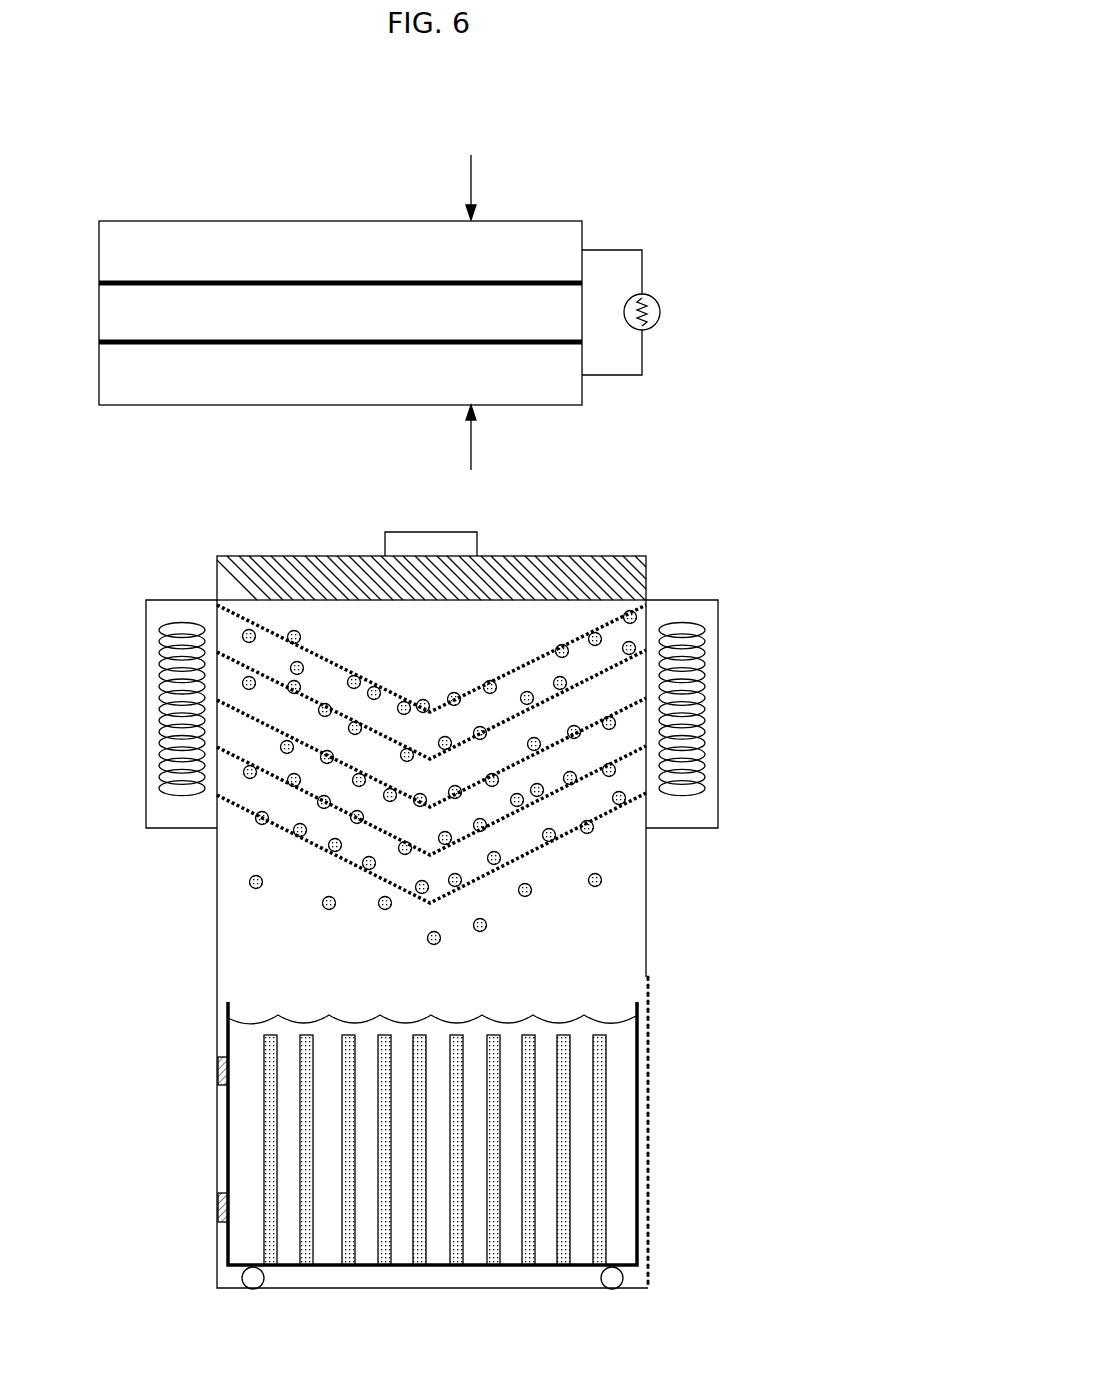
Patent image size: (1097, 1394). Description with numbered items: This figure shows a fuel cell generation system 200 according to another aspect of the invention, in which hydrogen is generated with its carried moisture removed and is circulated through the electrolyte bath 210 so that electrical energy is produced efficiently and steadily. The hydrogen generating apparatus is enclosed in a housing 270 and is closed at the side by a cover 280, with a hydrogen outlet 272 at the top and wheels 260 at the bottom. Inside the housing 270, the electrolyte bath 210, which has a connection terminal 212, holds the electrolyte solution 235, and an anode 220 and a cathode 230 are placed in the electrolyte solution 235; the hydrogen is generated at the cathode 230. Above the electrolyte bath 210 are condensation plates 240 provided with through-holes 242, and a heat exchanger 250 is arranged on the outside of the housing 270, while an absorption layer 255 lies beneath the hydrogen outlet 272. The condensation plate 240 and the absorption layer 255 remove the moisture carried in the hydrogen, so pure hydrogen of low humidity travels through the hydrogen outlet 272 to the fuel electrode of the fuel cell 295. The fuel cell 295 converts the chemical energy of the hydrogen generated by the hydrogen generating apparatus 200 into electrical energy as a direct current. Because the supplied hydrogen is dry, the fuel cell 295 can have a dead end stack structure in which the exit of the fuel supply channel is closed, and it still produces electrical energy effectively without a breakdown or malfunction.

The fuel cell generation system 200 is at (686, 120).
The fuel cell 295 is at (568, 225).
The hydrogen outlet 272 is at (428, 532).
The absorption layer 255 is at (637, 572).
The heat exchanger 250 is at (718, 617).
The condensation plate 240 is at (580, 630).
The through-hole 242 is at (610, 610).
The housing 270 is at (646, 910).
The electrolyte bath 210 is at (227, 1005).
The connection terminal 212 is at (218, 1070).
The electrolyte solution 235 is at (617, 1115).
The anode 220 is at (270, 1265).
The cathode 230 is at (307, 1265).
The cover 280 is at (648, 1170).
The wheel 260 is at (612, 1278).